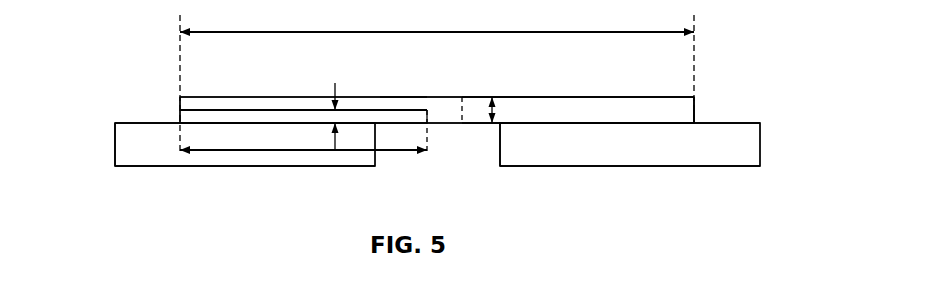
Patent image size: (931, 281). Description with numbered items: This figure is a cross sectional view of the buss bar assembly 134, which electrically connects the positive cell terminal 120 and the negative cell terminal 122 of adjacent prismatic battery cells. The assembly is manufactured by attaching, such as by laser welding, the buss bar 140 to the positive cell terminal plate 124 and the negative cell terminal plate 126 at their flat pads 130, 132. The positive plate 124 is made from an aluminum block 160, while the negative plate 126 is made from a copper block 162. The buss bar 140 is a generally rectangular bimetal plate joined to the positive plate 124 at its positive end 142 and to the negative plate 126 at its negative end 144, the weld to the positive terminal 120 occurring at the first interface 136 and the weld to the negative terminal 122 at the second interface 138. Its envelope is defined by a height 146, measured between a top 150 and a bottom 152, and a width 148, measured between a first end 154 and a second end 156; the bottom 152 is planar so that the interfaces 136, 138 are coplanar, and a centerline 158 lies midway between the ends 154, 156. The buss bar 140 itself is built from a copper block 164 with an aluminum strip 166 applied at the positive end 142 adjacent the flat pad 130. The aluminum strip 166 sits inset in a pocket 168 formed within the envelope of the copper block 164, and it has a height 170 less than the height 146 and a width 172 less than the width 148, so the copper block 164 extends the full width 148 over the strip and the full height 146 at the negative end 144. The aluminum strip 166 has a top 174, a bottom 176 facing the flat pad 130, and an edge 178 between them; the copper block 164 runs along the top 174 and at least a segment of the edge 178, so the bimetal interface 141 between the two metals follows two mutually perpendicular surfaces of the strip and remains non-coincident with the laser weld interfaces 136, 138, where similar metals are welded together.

The positive cell terminal 120 is at (230, 157).
The negative cell terminal 122 is at (698, 153).
The positive cell terminal plate 124 is at (122, 150).
The negative cell terminal plate 126 is at (748, 148).
The flat pad 130 is at (214, 122).
The flat pad 132 is at (636, 122).
The buss bar assembly 134 is at (112, 121).
The first interface 136 is at (177, 121).
The second interface 138 is at (699, 122).
The buss bar 140 is at (595, 111).
The bimetal interface 141 is at (360, 109).
The positive end 142 is at (192, 102).
The negative end 144 is at (679, 110).
The height 146 is at (496, 111).
The width 148 is at (438, 31).
The top 150 is at (552, 98).
The bottom 152 is at (470, 126).
The first end 154 is at (179, 104).
The second end 156 is at (697, 107).
The centerline 158 is at (458, 108).
The aluminum block 160 is at (287, 157).
The copper block 162 is at (618, 152).
The copper block 164 is at (526, 110).
The aluminum strip 166 is at (268, 118).
The pocket 168 is at (316, 109).
The height 170 is at (333, 143).
The width 172 is at (345, 151).
The top 174 is at (394, 100).
The bottom 176 is at (376, 137).
The edge 178 is at (429, 114).